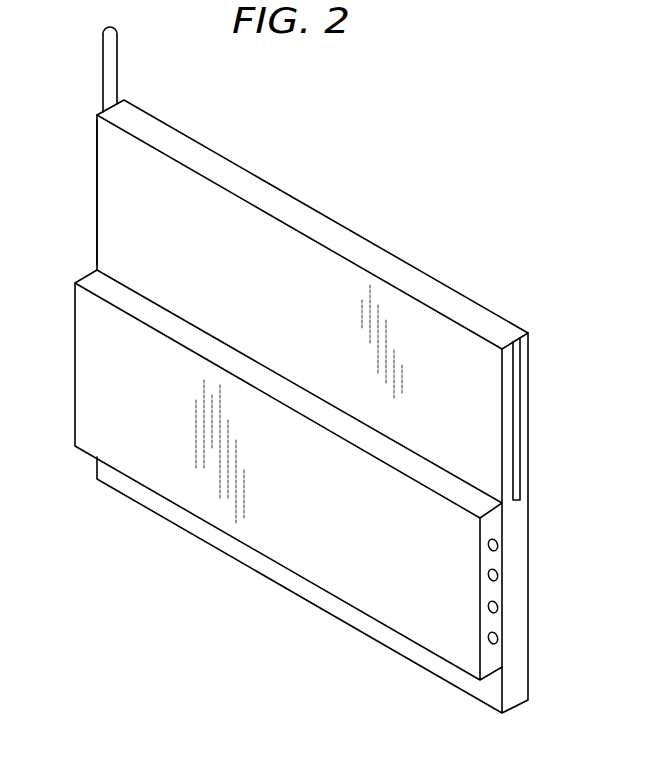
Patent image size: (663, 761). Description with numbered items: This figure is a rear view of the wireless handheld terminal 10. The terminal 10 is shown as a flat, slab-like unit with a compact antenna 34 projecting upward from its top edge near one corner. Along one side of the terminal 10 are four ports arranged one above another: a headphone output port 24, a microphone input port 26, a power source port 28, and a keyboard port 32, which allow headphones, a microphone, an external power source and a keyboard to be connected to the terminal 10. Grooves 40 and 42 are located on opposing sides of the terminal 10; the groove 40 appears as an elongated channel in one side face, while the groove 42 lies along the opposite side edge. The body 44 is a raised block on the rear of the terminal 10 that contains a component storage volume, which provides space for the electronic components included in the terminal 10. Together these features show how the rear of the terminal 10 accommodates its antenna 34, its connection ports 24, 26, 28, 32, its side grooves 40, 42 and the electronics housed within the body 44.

The wireless handheld terminal 10 is at (340, 238).
The headphone output port 24 is at (498, 542).
The microphone input port 26 is at (498, 573).
The power source port 28 is at (498, 605).
The keyboard port 32 is at (498, 636).
The compact antenna 34 is at (103, 78).
The groove 40 is at (521, 398).
The groove 42 is at (97, 180).
The body 44 is at (105, 373).